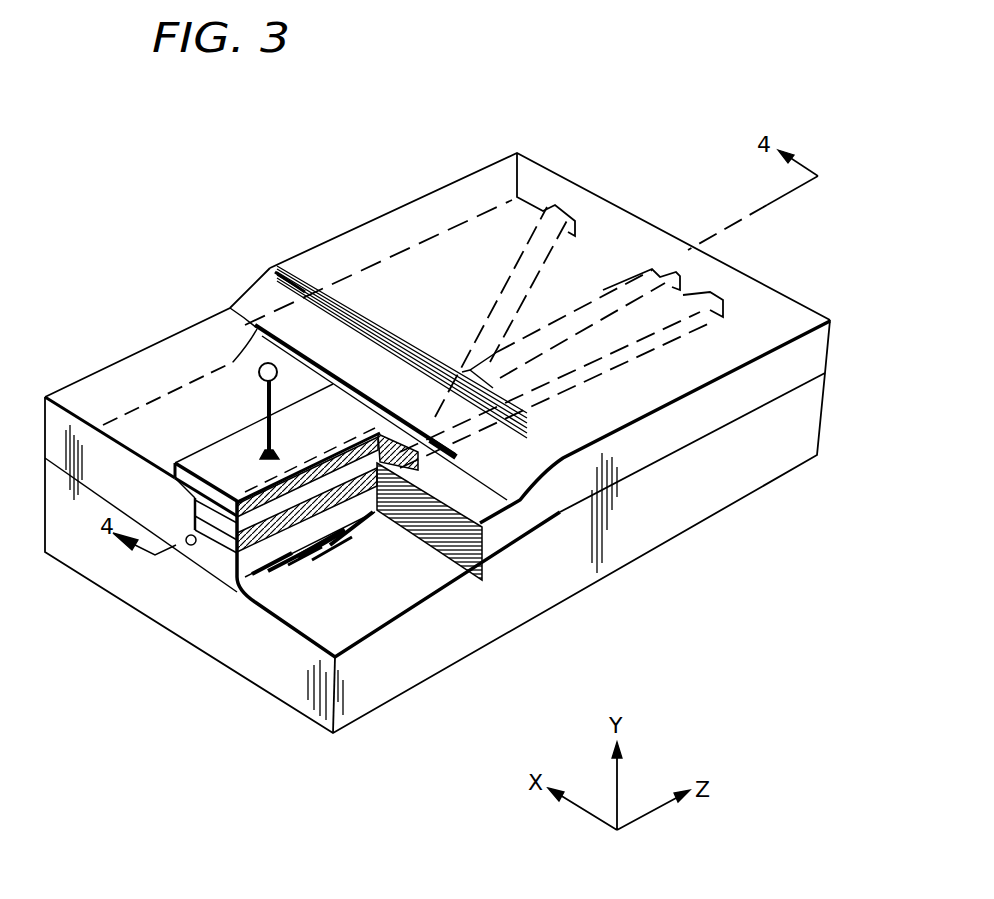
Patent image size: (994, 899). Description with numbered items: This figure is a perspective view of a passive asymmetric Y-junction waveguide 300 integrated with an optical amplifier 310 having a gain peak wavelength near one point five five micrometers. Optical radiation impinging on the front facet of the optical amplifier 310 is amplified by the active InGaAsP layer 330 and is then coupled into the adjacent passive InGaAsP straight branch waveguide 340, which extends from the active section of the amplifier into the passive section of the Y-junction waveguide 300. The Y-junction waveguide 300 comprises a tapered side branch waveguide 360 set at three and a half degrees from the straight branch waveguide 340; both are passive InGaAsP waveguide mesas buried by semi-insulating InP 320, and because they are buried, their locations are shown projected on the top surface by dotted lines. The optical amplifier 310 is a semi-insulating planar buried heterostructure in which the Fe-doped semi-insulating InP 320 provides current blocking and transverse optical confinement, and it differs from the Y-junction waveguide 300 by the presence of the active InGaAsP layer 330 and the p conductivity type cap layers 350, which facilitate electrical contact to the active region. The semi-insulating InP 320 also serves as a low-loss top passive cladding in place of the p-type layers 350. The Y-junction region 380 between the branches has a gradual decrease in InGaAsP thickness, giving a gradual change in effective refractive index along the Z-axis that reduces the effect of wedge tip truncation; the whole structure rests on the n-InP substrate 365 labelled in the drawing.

The passive Y-junction waveguide 300 is at (442, 323).
The optical amplifier 310 is at (125, 378).
The semi-insulating InP 320 is at (95, 480).
The active InGaAsP layer 330 is at (200, 522).
The straight branch waveguide 340 is at (227, 542).
The p conductivity type layers 350 is at (232, 456).
The side branch waveguide 360 is at (558, 236).
The n-InP substrate 365 is at (677, 532).
The Y-junction region 380 is at (580, 282).